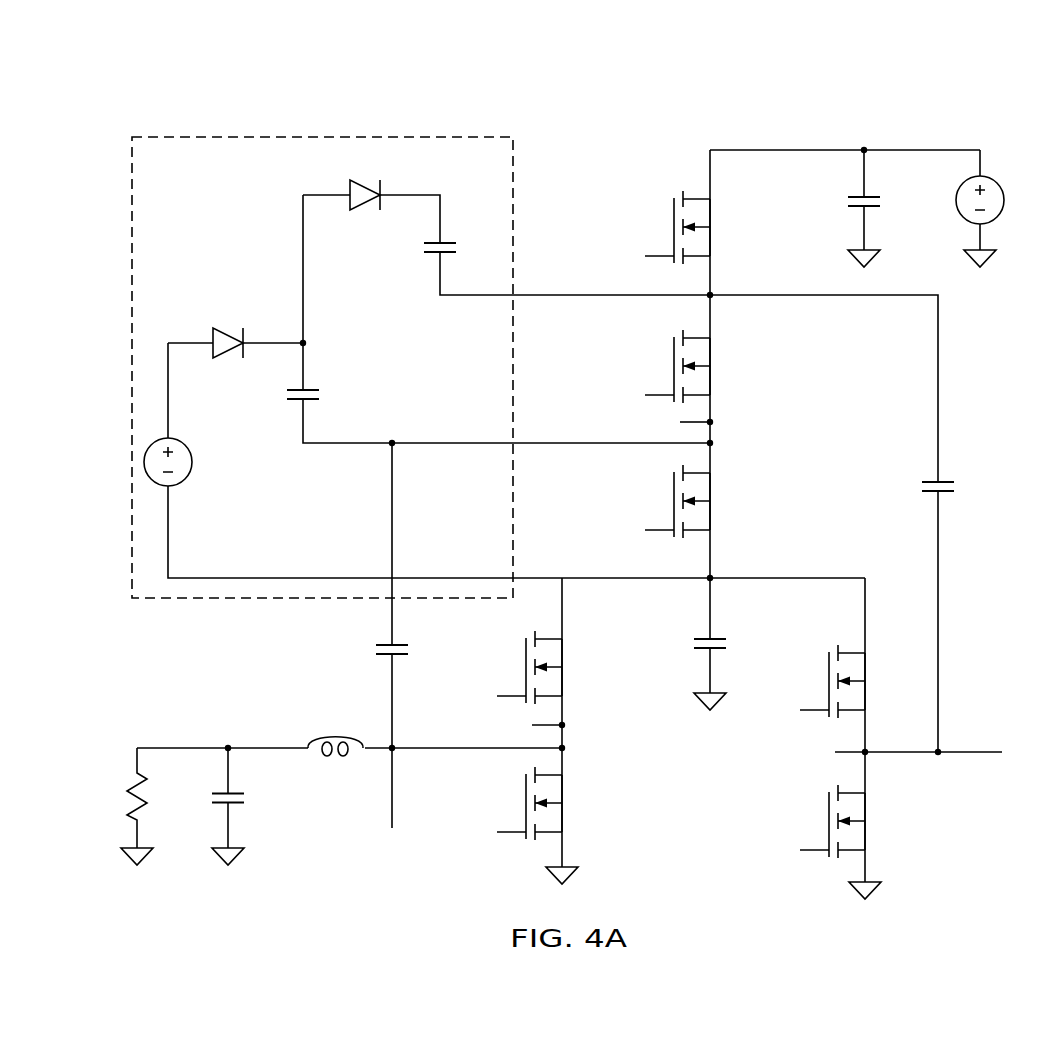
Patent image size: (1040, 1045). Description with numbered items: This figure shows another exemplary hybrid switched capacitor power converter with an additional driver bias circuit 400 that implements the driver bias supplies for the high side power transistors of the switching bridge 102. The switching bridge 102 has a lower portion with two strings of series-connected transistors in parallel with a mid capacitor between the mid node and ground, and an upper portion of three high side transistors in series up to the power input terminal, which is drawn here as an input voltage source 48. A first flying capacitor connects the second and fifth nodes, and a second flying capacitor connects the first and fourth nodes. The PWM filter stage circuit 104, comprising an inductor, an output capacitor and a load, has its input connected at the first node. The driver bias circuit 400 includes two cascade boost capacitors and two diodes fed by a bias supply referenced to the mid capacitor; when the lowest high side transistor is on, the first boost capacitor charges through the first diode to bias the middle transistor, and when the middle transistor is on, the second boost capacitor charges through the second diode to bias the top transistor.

The driver bias circuit 400 is at (182, 60).
The switching bridge 102 is at (752, 413).
The PWM filter stage circuit 104 is at (176, 672).
The input voltage source VIN 48 is at (987, 206).